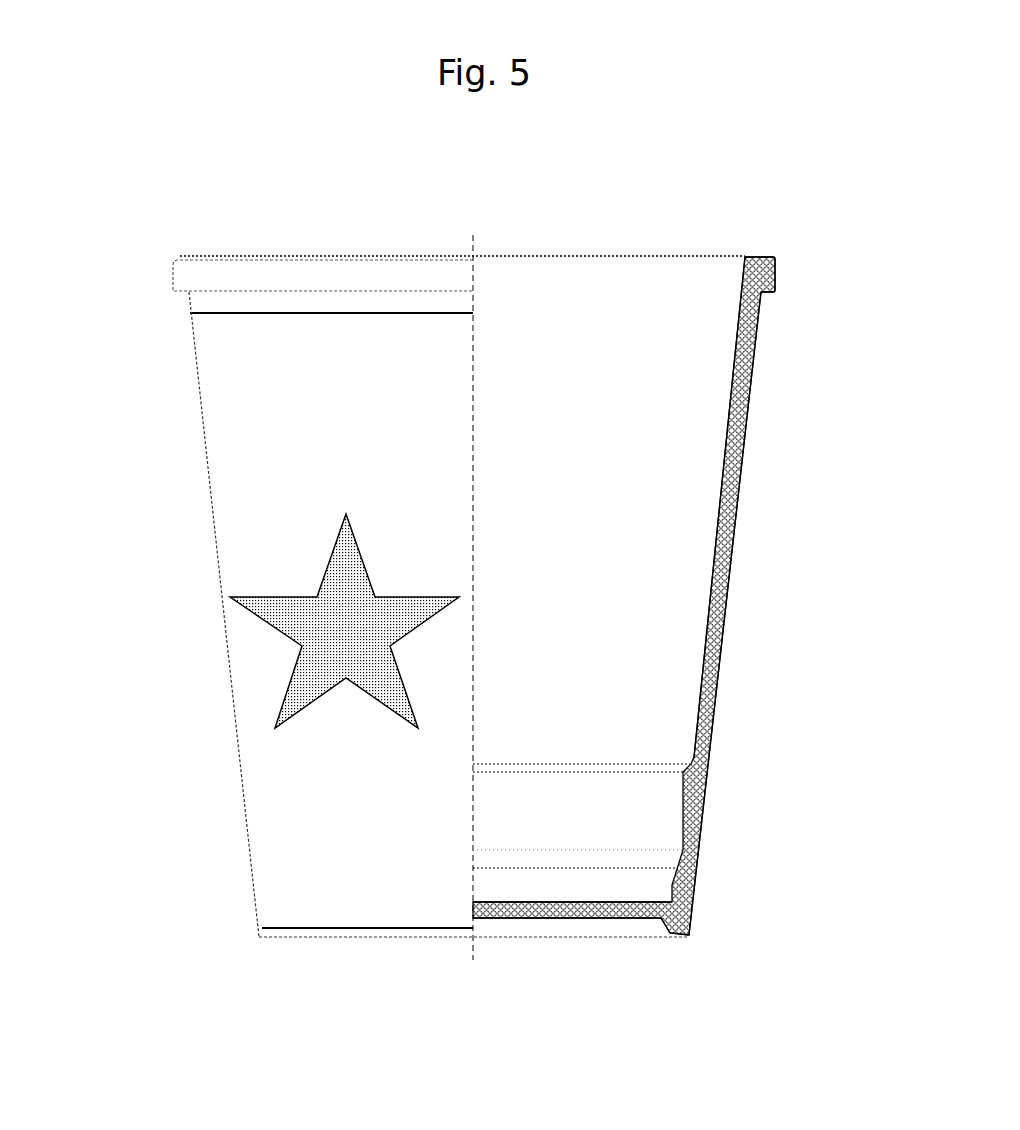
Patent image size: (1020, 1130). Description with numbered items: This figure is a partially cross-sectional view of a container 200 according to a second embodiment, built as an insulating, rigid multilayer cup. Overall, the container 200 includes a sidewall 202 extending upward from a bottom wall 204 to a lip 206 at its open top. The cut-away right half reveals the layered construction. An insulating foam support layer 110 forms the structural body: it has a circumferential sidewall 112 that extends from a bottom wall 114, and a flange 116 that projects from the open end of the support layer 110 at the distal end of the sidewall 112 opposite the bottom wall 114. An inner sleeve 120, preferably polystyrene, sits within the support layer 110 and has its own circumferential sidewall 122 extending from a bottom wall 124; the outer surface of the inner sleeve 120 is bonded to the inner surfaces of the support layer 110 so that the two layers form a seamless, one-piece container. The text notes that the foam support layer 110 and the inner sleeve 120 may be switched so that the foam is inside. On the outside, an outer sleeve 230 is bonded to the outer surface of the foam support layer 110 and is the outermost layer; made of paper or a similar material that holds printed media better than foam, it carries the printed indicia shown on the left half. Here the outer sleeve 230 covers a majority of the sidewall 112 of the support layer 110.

The container 200 is at (595, 223).
The support layer 110 is at (737, 565).
The circumferential sidewall 112 is at (715, 757).
The bottom wall 114 is at (685, 937).
The flange 116 is at (772, 330).
The inner sleeve 120 is at (728, 413).
The circumferential sidewall 122 is at (717, 657).
The bottom wall 124 is at (595, 918).
The sidewall 202 is at (200, 303).
The bottom wall 204 is at (383, 937).
The lip 206 is at (241, 272).
The outer sleeve 230 is at (240, 495).